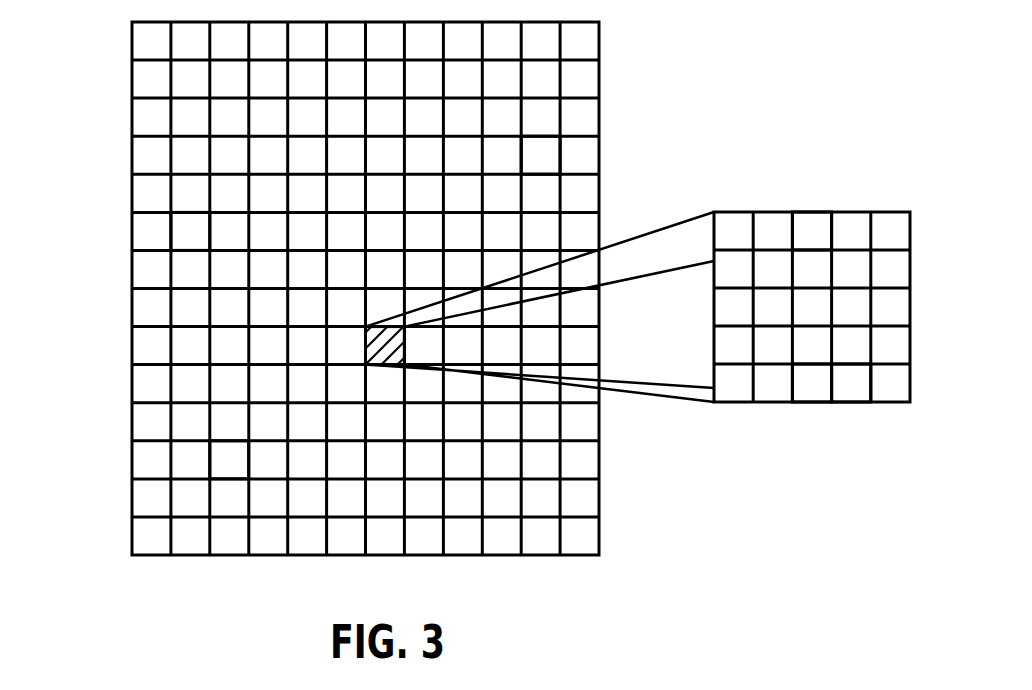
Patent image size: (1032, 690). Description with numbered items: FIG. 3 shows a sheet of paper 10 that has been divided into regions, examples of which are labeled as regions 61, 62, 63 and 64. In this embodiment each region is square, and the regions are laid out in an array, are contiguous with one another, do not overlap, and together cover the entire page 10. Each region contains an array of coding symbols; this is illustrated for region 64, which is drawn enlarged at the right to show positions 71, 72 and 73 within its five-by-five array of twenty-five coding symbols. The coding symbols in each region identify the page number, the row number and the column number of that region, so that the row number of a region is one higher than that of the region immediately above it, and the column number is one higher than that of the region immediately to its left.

The sheet of paper 10 is at (132, 80).
The region 61 is at (190, 228).
The region 62 is at (230, 458).
The region 63 is at (540, 150).
The region 64 is at (386, 368).
The coding symbol position 71 is at (813, 380).
The coding symbol position 72 is at (849, 380).
The coding symbol position 73 is at (812, 235).